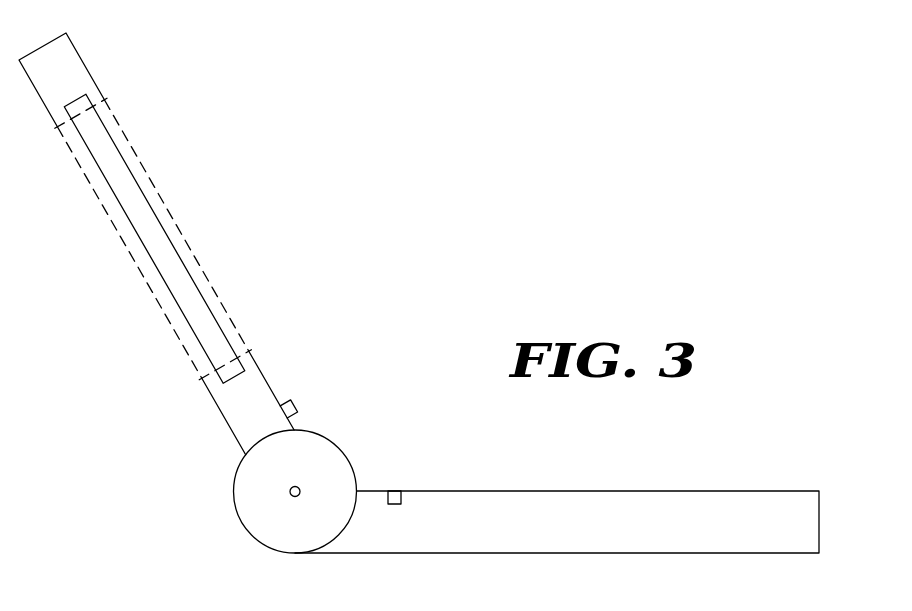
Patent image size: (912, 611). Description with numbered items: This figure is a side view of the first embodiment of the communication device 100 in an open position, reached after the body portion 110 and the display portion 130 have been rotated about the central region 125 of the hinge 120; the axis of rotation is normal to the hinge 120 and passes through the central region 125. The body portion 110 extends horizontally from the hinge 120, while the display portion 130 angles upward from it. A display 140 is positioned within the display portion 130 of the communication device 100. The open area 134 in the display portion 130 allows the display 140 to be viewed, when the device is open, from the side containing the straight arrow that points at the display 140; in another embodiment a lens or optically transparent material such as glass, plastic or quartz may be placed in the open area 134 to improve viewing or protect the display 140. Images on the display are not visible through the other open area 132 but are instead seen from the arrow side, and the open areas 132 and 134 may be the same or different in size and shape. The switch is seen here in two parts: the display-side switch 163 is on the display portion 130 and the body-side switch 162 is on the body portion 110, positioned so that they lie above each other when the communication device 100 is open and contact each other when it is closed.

The communication device 100 is at (437, 340).
The body portion 110 is at (710, 497).
The hinge 120 is at (233, 475).
The central region 125 is at (290, 492).
The display portion 130 is at (47, 43).
The open area 132 is at (118, 218).
The open area 134 is at (142, 170).
The display 140 is at (168, 253).
The body-side switch 162 is at (392, 483).
The display-side switch 163 is at (297, 407).